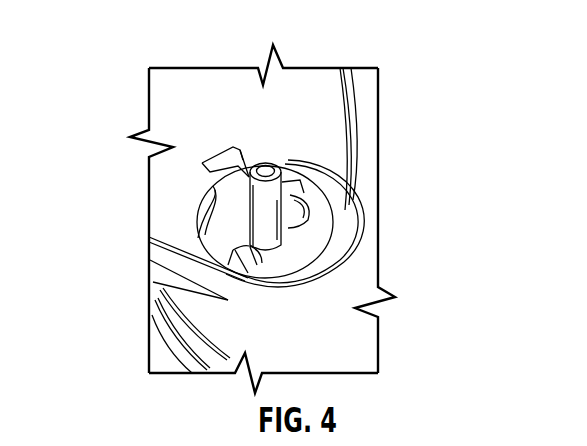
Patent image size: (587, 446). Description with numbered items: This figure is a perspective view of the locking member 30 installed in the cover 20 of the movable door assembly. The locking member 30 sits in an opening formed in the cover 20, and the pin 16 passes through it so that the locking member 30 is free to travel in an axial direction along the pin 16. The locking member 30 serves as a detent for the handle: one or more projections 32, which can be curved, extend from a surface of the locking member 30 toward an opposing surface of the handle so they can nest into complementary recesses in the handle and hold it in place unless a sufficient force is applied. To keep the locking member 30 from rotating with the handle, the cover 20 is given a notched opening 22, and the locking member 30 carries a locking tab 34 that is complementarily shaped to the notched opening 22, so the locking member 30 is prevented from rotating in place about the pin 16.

The pin 16 is at (267, 230).
The cover 20 is at (313, 85).
The notched opening 22 is at (233, 148).
The locking member 30 is at (313, 233).
The projection 32 is at (300, 180).
The locking tab 34 is at (238, 166).